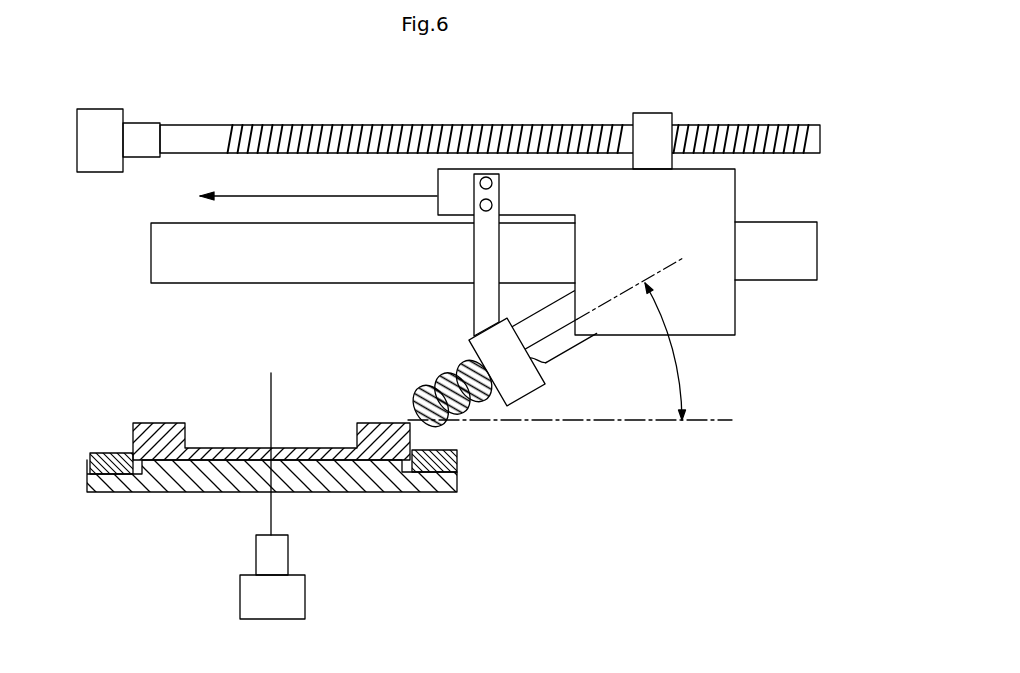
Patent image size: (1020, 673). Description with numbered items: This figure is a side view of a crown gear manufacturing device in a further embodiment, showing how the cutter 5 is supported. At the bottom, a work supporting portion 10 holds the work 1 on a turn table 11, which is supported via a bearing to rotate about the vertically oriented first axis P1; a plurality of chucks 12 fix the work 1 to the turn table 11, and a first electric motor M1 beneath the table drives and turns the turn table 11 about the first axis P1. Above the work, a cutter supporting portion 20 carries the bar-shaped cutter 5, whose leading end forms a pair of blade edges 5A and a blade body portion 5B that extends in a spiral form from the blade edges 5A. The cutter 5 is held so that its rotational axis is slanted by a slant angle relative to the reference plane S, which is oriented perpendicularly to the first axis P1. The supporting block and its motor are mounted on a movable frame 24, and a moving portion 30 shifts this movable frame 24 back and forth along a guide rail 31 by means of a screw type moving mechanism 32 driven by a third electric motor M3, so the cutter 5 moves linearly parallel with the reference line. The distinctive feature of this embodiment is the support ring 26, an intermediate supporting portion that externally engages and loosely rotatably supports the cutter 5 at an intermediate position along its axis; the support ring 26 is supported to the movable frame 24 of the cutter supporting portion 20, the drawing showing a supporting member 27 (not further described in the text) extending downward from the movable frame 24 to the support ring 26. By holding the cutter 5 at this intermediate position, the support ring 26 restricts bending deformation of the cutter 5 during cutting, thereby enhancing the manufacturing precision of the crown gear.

The work 1 is at (165, 425).
The cutter 5 is at (419, 368).
The blade edges 5A is at (410, 400).
The blade body portion 5B is at (465, 355).
The work supporting portion 10 is at (297, 468).
The turn table 11 is at (360, 492).
The chucks 12 is at (122, 455).
The cutter supporting portion 20 is at (735, 338).
The movable frame 24 is at (737, 200).
The support ring 26 is at (521, 395).
The arm 27 is at (480, 262).
The moving portion 30 is at (415, 125).
The guide rail 31 is at (157, 253).
The screw type moving mechanism 32 is at (665, 118).
The first electric motor M1 is at (305, 593).
The third electric motor M3 is at (97, 113).
The first axis P1 is at (273, 393).
The reference plane S is at (638, 424).